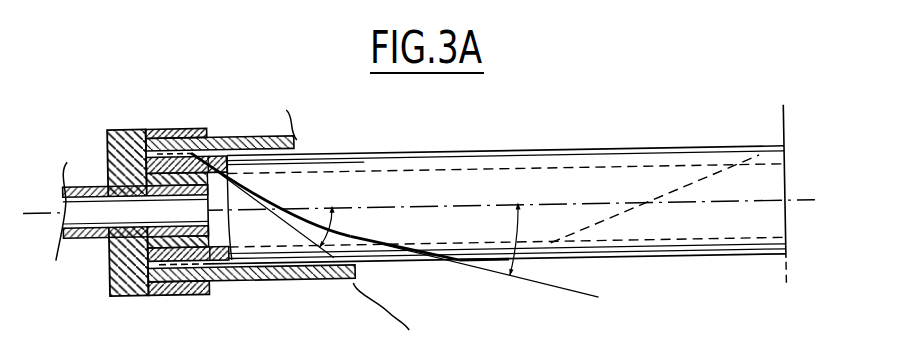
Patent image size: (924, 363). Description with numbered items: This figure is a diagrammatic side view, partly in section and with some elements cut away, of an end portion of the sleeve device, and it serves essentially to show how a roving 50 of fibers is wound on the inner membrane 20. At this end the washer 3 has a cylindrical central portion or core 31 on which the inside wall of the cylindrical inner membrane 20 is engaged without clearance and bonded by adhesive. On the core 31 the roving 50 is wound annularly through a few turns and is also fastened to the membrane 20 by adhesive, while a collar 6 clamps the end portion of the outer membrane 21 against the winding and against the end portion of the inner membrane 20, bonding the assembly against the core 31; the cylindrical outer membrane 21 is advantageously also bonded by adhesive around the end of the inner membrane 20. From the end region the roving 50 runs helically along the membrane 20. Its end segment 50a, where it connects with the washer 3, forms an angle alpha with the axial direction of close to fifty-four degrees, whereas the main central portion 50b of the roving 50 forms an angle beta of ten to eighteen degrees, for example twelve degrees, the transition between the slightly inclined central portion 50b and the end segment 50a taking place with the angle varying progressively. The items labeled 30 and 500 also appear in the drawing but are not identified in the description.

The washer 3 is at (122, 125).
The collar 6 is at (157, 146).
The inner membrane 20 is at (175, 149).
The outer membrane 21 is at (258, 135).
The tube 30 is at (85, 233).
The core 31 is at (170, 262).
The adhesive 500 is at (185, 266).
The roving 50 is at (397, 254).
The end segment of the roving 50a is at (250, 187).
The central portion of the roving 50b is at (342, 236).